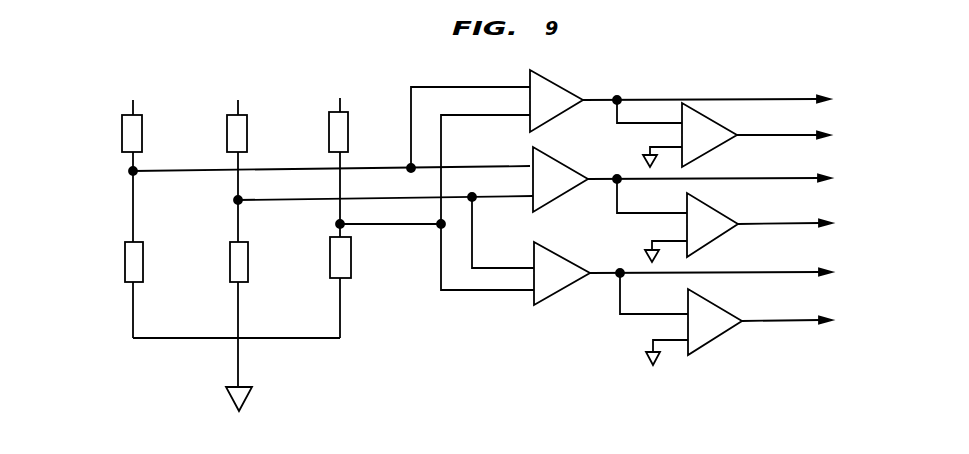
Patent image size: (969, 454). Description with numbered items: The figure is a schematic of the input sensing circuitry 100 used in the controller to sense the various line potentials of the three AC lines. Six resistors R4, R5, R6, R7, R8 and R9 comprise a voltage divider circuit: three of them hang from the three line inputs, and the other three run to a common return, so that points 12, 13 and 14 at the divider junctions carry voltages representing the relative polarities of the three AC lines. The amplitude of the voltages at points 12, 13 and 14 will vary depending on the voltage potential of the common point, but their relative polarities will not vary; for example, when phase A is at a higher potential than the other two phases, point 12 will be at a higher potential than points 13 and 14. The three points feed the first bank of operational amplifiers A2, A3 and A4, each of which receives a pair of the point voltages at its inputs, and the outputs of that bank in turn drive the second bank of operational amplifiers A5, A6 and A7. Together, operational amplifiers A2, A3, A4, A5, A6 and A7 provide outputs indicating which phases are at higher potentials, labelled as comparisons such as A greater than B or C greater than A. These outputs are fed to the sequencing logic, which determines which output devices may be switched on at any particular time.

The input sensing circuitry 100 is at (463, 336).
The resistor R4 is at (142, 125).
The resistor R5 is at (143, 267).
The resistor R6 is at (247, 125).
The resistor R7 is at (248, 267).
The resistor R8 is at (348, 122).
The resistor R9 is at (351, 266).
The point 12 is at (130, 172).
The point 13 is at (236, 201).
The point 14 is at (338, 224).
The operational amplifier A2 is at (556, 101).
The operational amplifier A3 is at (560, 179).
The operational amplifier A4 is at (562, 273).
The operational amplifier A5 is at (709, 135).
The operational amplifier A6 is at (712, 225).
The operational amplifier A7 is at (715, 322).